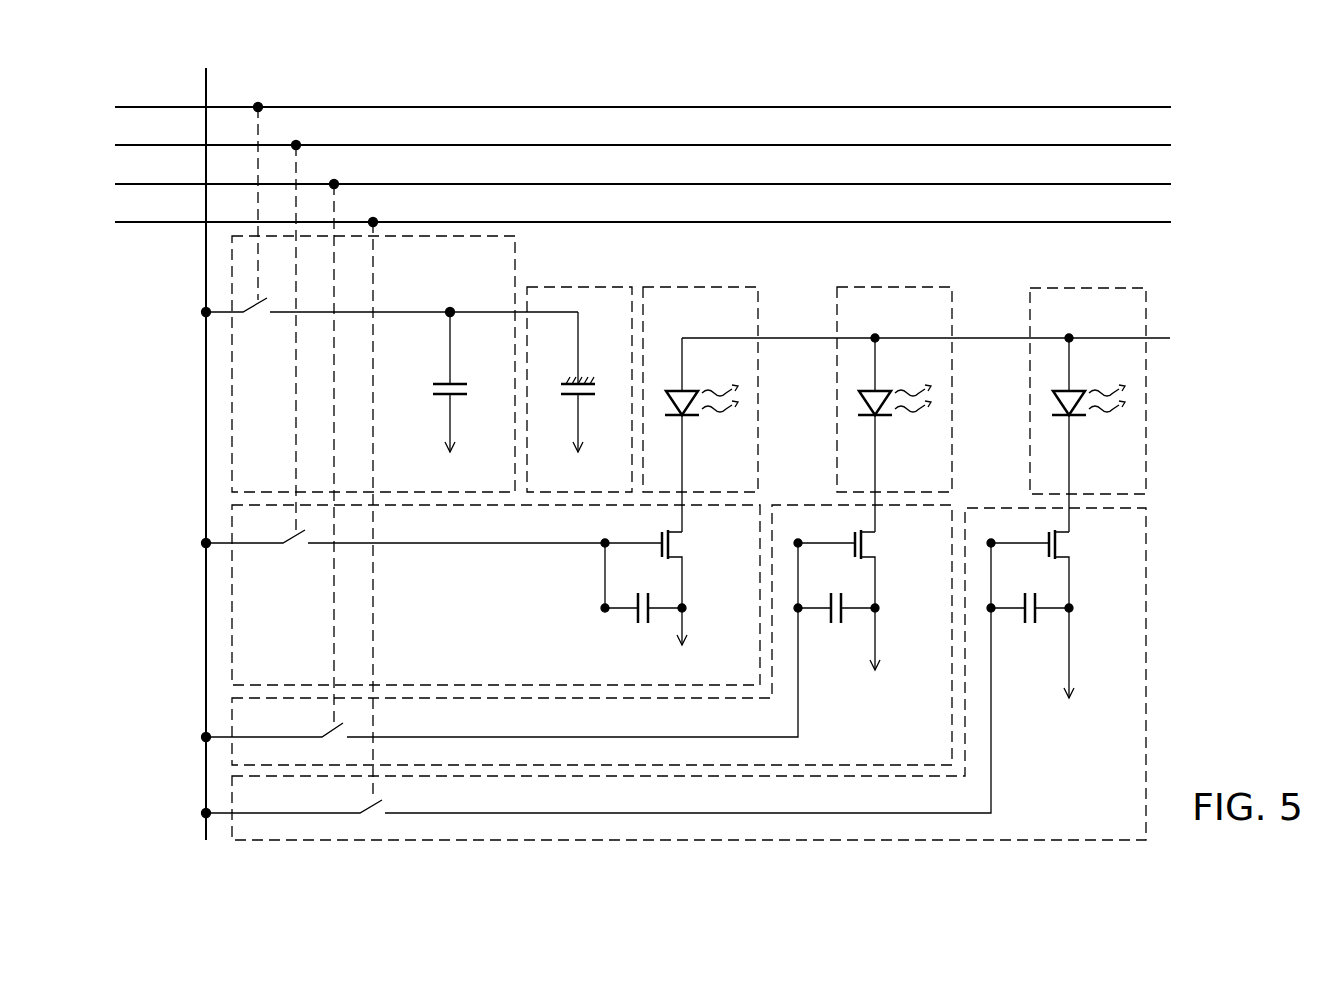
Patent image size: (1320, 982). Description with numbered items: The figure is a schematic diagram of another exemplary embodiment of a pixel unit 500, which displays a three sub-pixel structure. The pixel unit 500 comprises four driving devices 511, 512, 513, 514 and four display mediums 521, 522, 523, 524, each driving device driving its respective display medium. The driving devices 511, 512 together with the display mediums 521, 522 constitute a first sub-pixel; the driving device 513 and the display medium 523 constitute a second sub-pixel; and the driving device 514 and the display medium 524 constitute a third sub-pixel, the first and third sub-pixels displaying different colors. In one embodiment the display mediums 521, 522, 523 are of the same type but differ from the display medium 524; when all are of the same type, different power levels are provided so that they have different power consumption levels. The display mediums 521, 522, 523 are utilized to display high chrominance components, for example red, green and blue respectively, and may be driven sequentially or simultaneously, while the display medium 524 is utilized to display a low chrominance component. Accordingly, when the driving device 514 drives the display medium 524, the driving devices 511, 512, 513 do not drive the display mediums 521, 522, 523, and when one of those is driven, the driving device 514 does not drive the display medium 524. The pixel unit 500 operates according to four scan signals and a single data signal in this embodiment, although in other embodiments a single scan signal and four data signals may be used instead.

The pixel unit 500 is at (1199, 90).
The driving device 511 is at (232, 787).
The driving device 512 is at (232, 710).
The driving device 513 is at (232, 607).
The driving device 514 is at (232, 428).
The display medium 521 is at (1086, 286).
The display medium 522 is at (891, 286).
The display medium 523 is at (698, 286).
The display medium 524 is at (576, 286).